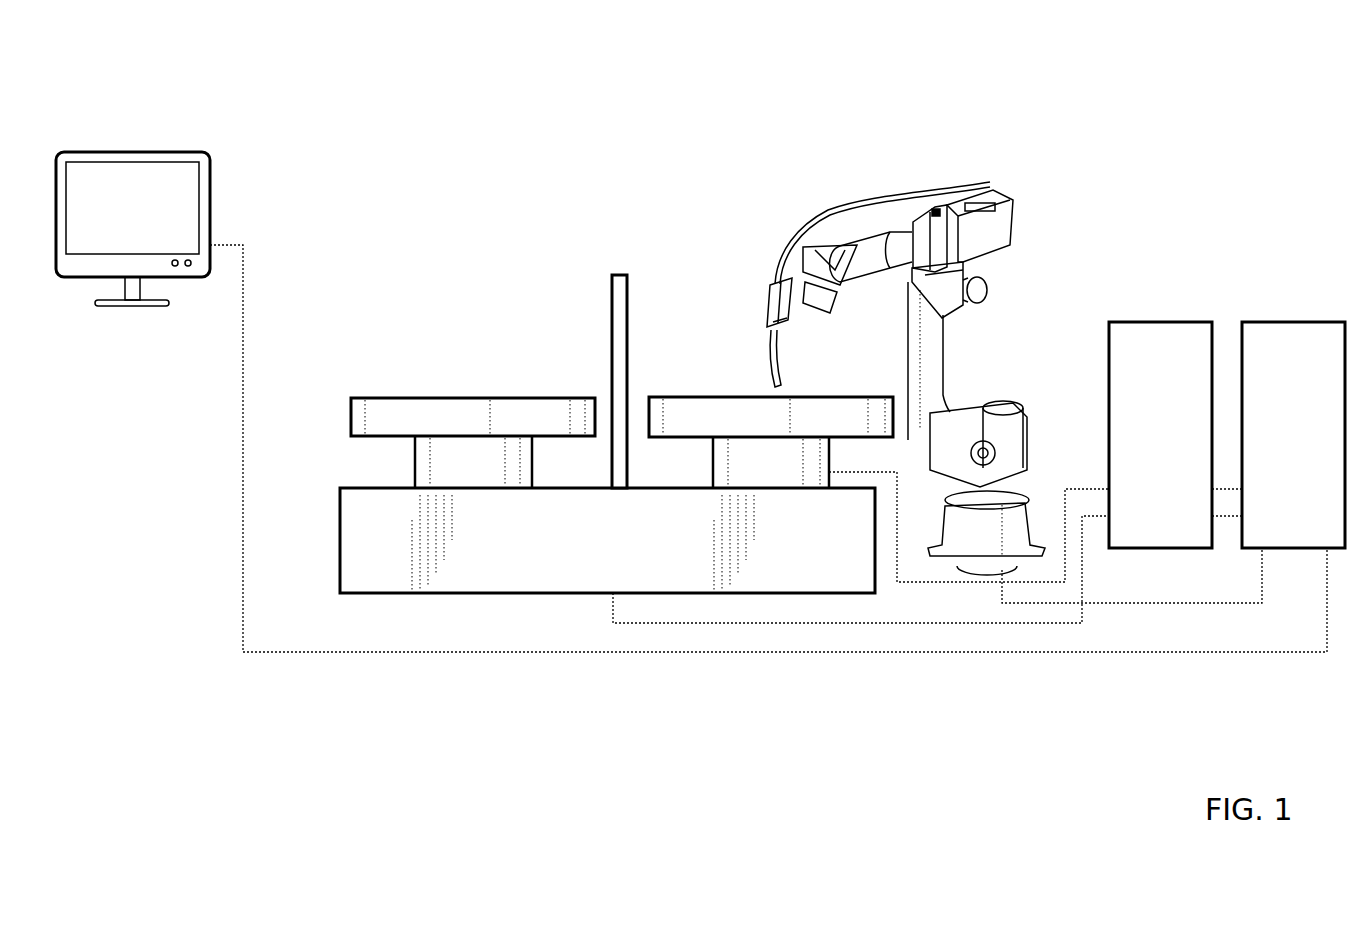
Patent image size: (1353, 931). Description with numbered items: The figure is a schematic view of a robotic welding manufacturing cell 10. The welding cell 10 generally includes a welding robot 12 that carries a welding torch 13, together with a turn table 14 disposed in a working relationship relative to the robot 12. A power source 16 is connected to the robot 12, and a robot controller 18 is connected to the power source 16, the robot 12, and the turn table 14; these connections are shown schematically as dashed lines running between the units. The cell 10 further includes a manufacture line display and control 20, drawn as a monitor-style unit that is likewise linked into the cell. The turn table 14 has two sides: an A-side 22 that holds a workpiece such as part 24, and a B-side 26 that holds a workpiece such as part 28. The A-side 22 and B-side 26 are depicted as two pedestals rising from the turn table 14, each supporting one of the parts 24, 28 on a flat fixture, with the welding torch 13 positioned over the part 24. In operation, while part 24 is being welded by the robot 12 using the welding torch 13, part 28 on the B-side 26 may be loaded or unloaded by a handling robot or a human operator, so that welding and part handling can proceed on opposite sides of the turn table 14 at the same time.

The robotic welding manufacturing cell 10 is at (846, 120).
The welding robot 12 is at (985, 195).
The welding torch 13 is at (765, 348).
The turn table 14 is at (350, 535).
The power source 16 is at (1155, 332).
The robot controller 18 is at (1268, 332).
The manufacture line display and control 20 is at (208, 183).
The A-side 22 is at (722, 465).
The part 24 is at (672, 397).
The B-side 26 is at (423, 465).
The part 28 is at (475, 407).